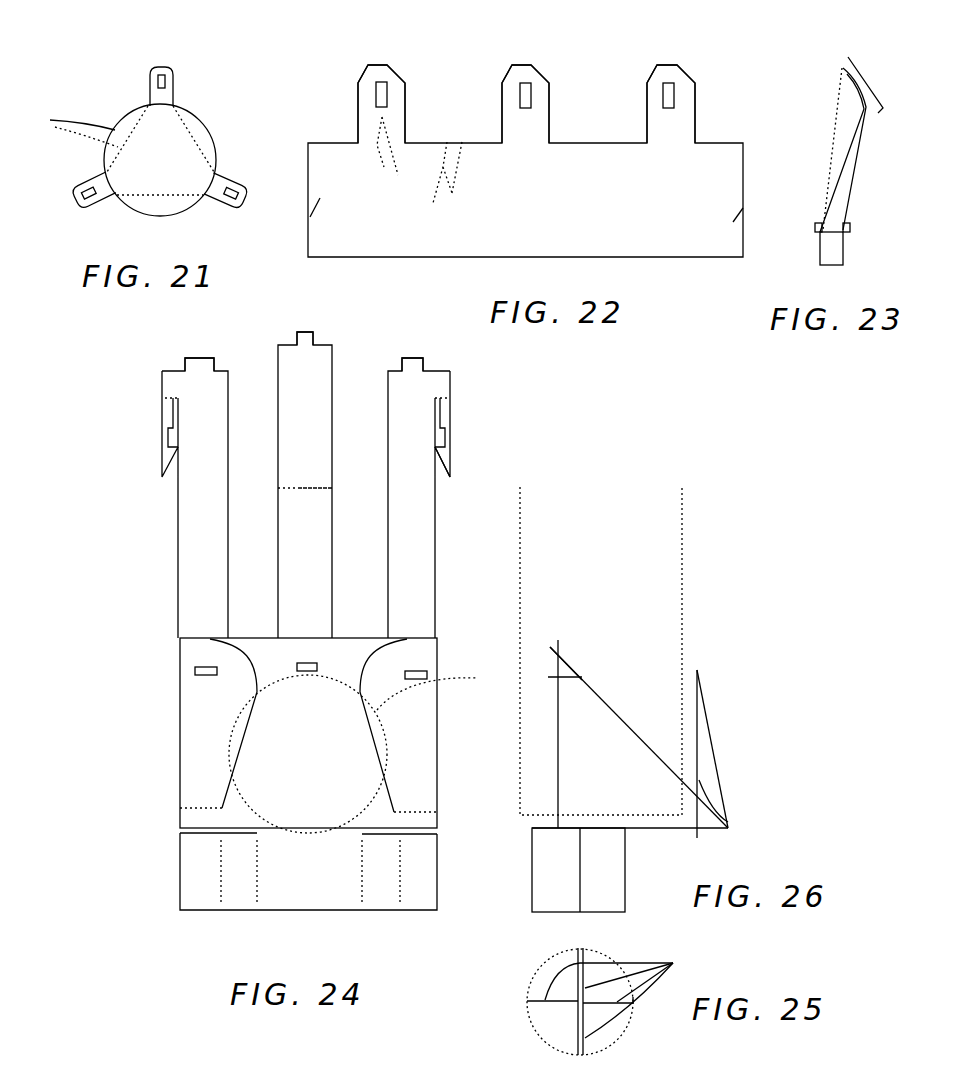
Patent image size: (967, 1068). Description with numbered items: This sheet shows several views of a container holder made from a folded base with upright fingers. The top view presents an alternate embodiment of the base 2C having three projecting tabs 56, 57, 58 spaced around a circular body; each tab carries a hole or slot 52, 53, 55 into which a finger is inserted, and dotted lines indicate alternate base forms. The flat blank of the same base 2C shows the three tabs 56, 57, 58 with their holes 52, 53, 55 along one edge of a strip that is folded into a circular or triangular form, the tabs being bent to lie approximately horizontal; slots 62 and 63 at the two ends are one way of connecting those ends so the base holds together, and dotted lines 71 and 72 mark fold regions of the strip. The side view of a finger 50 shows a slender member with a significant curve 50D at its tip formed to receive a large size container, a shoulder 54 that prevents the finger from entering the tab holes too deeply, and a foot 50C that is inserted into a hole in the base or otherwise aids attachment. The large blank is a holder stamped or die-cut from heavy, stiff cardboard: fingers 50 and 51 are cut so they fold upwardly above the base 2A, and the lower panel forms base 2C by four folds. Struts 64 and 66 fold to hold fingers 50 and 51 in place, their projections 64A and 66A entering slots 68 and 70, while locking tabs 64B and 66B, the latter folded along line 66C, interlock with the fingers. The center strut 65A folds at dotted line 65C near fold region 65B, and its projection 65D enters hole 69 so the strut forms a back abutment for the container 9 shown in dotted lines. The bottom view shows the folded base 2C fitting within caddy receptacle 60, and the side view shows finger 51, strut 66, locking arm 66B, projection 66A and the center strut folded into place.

In FIG. 24, the base 2A is at (330, 769).
In FIG. 26, the base 2A is at (532, 828).
In FIG. 21, the base 2C is at (72, 120).
In FIG. 22, the base 2C is at (540, 224).
In FIG. 24, the base 2C is at (318, 891).
In FIG. 26, the base 2C is at (625, 868).
In FIG. 25, the base 2C is at (673, 963).
In FIG. 24, the container 9 is at (439, 685).
In FIG. 26, the container 9 is at (650, 812).
In FIG. 23, the finger 50 is at (860, 122).
In FIG. 24, the finger 50 is at (217, 725).
In FIG. 23, the foot 50C is at (835, 258).
In FIG. 23, the curve 50D is at (884, 84).
In FIG. 24, the finger 51 is at (413, 732).
In FIG. 26, the finger 51 is at (583, 734).
In FIG. 21, the hole 52 is at (85, 187).
In FIG. 22, the hole 52 is at (377, 95).
In FIG. 21, the hole 53 is at (227, 200).
In FIG. 22, the hole 53 is at (667, 97).
In FIG. 23, the shoulder 54 is at (855, 228).
In FIG. 21, the hole 55 is at (165, 82).
In FIG. 22, the hole 55 is at (520, 97).
In FIG. 21, the tab 56 is at (82, 202).
In FIG. 22, the tab 56 is at (380, 73).
In FIG. 21, the tab 57 is at (148, 92).
In FIG. 22, the tab 57 is at (522, 74).
In FIG. 21, the tab 58 is at (217, 185).
In FIG. 22, the tab 58 is at (668, 73).
In FIG. 25, the caddy receptacle 60 is at (528, 1012).
In FIG. 22, the slot 62 is at (312, 217).
In FIG. 22, the slot 63 is at (740, 212).
In FIG. 24, the strut 64 is at (200, 593).
In FIG. 24, the projection 64A is at (198, 362).
In FIG. 24, the locking tab 64B is at (167, 425).
In FIG. 24, the center strut 65A is at (303, 435).
In FIG. 26, the center strut 65A is at (705, 796).
In FIG. 24, the center strut fold 65B is at (295, 527).
In FIG. 26, the center strut fold 65B is at (717, 760).
In FIG. 24, the dotted fold line 65C is at (303, 485).
In FIG. 26, the dotted fold line 65C is at (697, 670).
In FIG. 24, the projection 65D is at (308, 335).
In FIG. 24, the strut 66 is at (418, 575).
In FIG. 26, the strut 66 is at (628, 720).
In FIG. 24, the projection 66A is at (413, 357).
In FIG. 26, the projection 66A is at (550, 643).
In FIG. 24, the locking tab 66B is at (448, 455).
In FIG. 26, the locking tab 66B is at (562, 673).
In FIG. 24, the fold line 66C is at (442, 397).
In FIG. 24, the slot 68 is at (198, 670).
In FIG. 24, the hole 69 is at (300, 667).
In FIG. 24, the slot 70 is at (410, 673).
In FIG. 22, the fold line 71 is at (398, 159).
In FIG. 22, the fold line 72 is at (442, 189).